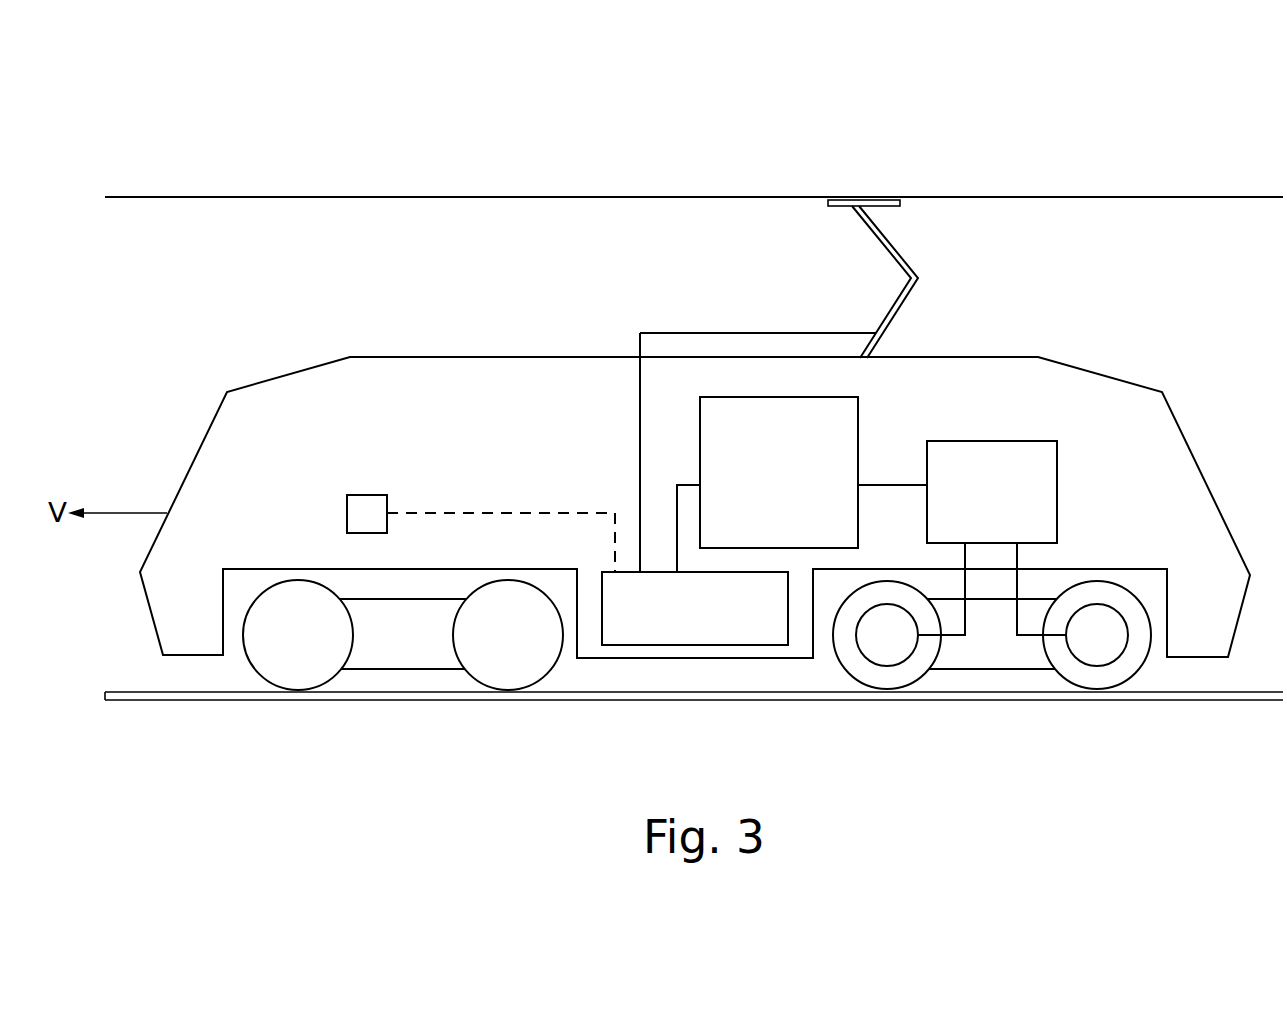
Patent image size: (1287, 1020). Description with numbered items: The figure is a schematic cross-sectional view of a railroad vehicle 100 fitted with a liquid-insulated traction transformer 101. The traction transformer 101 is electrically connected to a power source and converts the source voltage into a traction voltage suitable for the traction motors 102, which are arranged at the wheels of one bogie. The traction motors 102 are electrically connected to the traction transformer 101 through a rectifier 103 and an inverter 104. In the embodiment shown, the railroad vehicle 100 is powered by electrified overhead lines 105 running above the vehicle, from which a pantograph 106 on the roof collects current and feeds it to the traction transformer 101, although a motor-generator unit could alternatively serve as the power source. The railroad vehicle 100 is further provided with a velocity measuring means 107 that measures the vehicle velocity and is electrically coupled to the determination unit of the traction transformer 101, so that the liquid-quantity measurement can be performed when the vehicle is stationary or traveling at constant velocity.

The railroad vehicle 100 is at (1143, 142).
The traction transformer 101 is at (700, 647).
The traction motors 102 is at (887, 666).
The rectifier 103 is at (860, 432).
The inverter 104 is at (1057, 480).
The electrified overhead lines 105 is at (598, 195).
The pantograph 106 is at (910, 262).
The velocity measuring means 107 is at (365, 495).